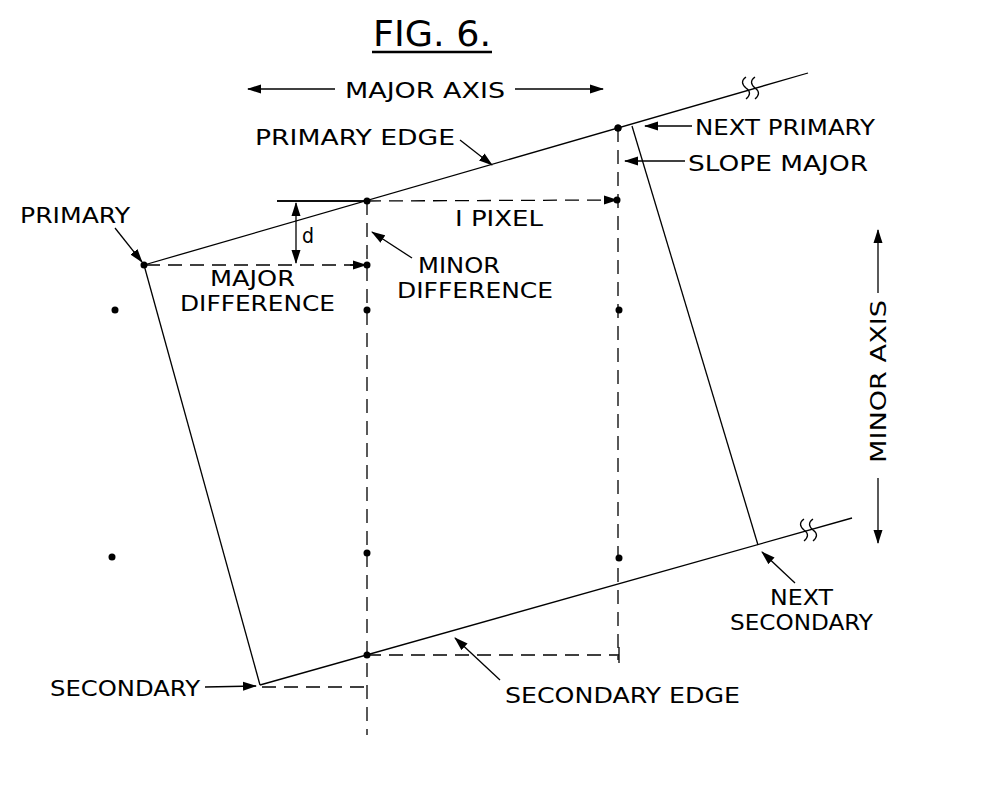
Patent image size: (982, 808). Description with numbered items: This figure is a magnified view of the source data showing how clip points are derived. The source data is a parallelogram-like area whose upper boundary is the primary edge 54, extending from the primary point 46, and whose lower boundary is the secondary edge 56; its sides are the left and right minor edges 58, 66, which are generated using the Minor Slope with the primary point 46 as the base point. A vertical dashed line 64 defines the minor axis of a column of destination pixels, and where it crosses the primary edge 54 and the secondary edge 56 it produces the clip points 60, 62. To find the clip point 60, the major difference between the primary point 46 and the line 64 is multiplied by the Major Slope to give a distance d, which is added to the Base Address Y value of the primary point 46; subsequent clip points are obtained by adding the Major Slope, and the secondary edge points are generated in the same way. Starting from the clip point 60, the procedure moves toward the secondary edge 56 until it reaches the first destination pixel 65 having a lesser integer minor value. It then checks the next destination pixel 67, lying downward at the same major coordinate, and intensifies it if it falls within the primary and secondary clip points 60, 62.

The primary point 46 is at (146, 261).
The primary edge 54 is at (617, 127).
The secondary edge 56 is at (525, 610).
The left minor edge 58 is at (190, 433).
The clip point 60 is at (365, 200).
The clip point 62 is at (369, 657).
The line 64 is at (370, 452).
The pixel 65 is at (370, 312).
The right minor edge 66 is at (703, 352).
The destination pixel 67 is at (370, 553).